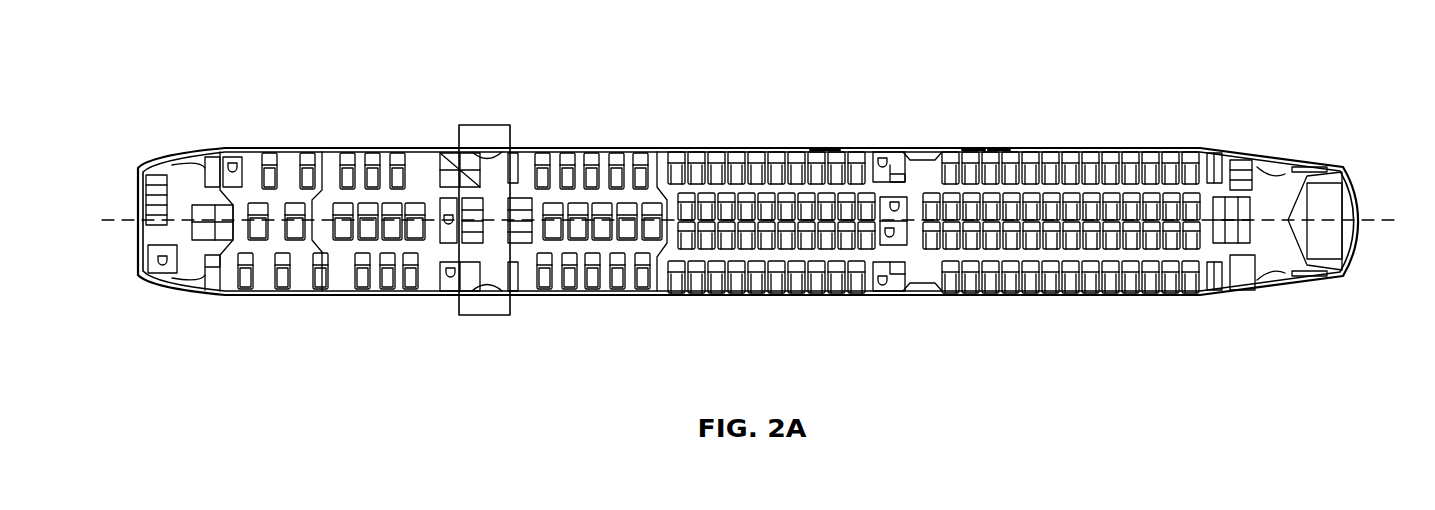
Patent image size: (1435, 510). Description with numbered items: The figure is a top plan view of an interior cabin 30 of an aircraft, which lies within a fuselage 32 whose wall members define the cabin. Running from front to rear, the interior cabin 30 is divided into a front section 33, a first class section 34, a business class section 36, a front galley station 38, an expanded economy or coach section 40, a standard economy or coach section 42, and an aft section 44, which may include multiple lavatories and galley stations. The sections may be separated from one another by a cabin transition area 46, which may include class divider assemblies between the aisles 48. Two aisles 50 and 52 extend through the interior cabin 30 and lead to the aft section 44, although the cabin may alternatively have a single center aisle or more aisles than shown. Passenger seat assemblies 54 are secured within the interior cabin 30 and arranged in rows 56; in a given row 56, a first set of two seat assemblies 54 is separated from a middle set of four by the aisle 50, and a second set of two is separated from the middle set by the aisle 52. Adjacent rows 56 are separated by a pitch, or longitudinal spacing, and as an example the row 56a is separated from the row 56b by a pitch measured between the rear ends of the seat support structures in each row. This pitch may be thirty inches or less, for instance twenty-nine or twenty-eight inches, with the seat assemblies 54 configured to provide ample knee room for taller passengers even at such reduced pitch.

The interior cabin 30 is at (276, 52).
The fuselage 32 is at (605, 106).
The front section 33 is at (196, 306).
The first class section 34 is at (293, 295).
The business class section 36 is at (362, 147).
The front galley station 38 is at (486, 316).
The expanded economy or coach section 40 is at (585, 295).
The standard economy or coach section 42 is at (715, 147).
The aft section 44 is at (1281, 176).
The cabin transition area 46 is at (213, 147).
The aisles 48 is at (478, 190).
The aisle 50 is at (1075, 187).
The aisle 52 is at (1093, 255).
The passenger seat assemblies 54 is at (824, 147).
The rows 56 is at (823, 295).
The row 56a is at (975, 148).
The row 56b is at (997, 148).